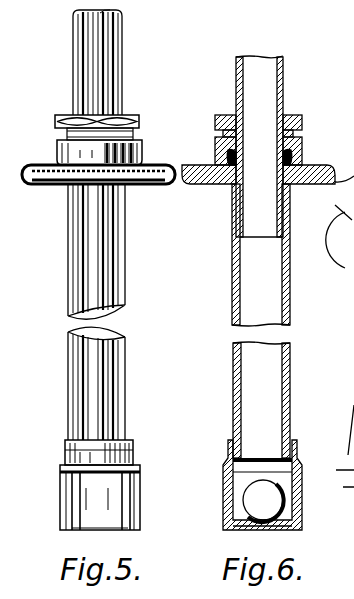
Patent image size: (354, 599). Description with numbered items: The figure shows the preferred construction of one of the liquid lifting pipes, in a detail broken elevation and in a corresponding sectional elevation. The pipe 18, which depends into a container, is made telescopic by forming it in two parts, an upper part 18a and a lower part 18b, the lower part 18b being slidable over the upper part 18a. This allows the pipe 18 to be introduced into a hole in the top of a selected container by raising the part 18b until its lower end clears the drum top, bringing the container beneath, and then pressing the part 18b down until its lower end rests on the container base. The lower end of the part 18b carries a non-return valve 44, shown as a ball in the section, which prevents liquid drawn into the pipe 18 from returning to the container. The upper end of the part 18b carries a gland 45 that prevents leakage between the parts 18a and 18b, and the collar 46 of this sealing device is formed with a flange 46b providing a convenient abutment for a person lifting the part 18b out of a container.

In FIG. 5, the pipe 18 is at (122, 43).
In FIG. 6, the pipe 18 is at (281, 59).
In FIG. 5, the upper part of pipe 18a is at (105, 107).
In FIG. 6, the upper part of pipe 18a is at (270, 108).
In FIG. 5, the lower part of pipe 18b is at (128, 347).
In FIG. 6, the lower part of pipe 18b is at (310, 308).
In FIG. 6, the non-return valve 44 is at (270, 503).
In FIG. 6, the gland 45 is at (290, 158).
In FIG. 5, the collar 46 is at (140, 154).
In FIG. 6, the collar 46 is at (230, 158).
In FIG. 5, the flange 46b is at (170, 186).